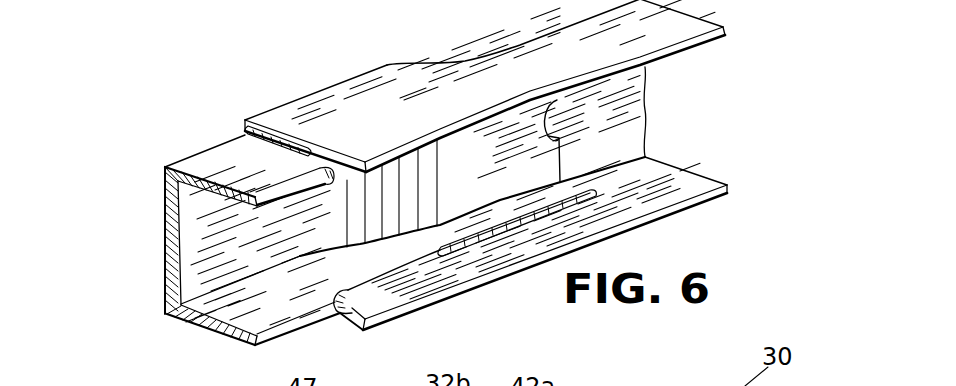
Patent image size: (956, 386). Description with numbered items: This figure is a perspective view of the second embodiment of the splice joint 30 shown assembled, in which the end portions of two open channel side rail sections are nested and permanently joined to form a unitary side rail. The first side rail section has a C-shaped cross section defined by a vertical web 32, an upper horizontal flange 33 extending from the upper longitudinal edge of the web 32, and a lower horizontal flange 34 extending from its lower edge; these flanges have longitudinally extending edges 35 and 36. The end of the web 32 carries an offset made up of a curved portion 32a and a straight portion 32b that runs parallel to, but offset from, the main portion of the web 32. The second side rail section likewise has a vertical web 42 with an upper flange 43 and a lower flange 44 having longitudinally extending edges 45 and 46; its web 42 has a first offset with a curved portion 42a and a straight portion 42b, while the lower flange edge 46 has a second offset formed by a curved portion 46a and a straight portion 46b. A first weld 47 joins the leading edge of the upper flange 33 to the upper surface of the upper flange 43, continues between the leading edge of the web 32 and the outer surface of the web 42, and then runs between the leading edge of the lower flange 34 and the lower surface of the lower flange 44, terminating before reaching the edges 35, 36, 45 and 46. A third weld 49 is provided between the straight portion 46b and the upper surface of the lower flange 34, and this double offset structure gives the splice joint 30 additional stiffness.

The splice joint 30 is at (473, 193).
The vertical web 32 is at (627, 101).
The curved portion 32a is at (431, 63).
The straight portion 32b is at (320, 89).
The upper horizontal flange 33 is at (389, 126).
The lower horizontal flange 34 is at (675, 182).
The longitudinally extending edge 35 is at (698, 45).
The longitudinally extending edge 36 is at (613, 233).
The vertical web 42 is at (197, 251).
The curved portion 42a is at (392, 200).
The straight portion 42b is at (503, 143).
The upper horizontal flange 43 is at (217, 163).
The lower horizontal flange 44 is at (284, 307).
The longitudinally extending edge 45 is at (277, 196).
The longitudinally extending edge 46 is at (278, 337).
The curved portion 46a is at (340, 296).
The straight portion 46b is at (407, 266).
The first weld 47 is at (273, 131).
The third weld 49 is at (495, 237).